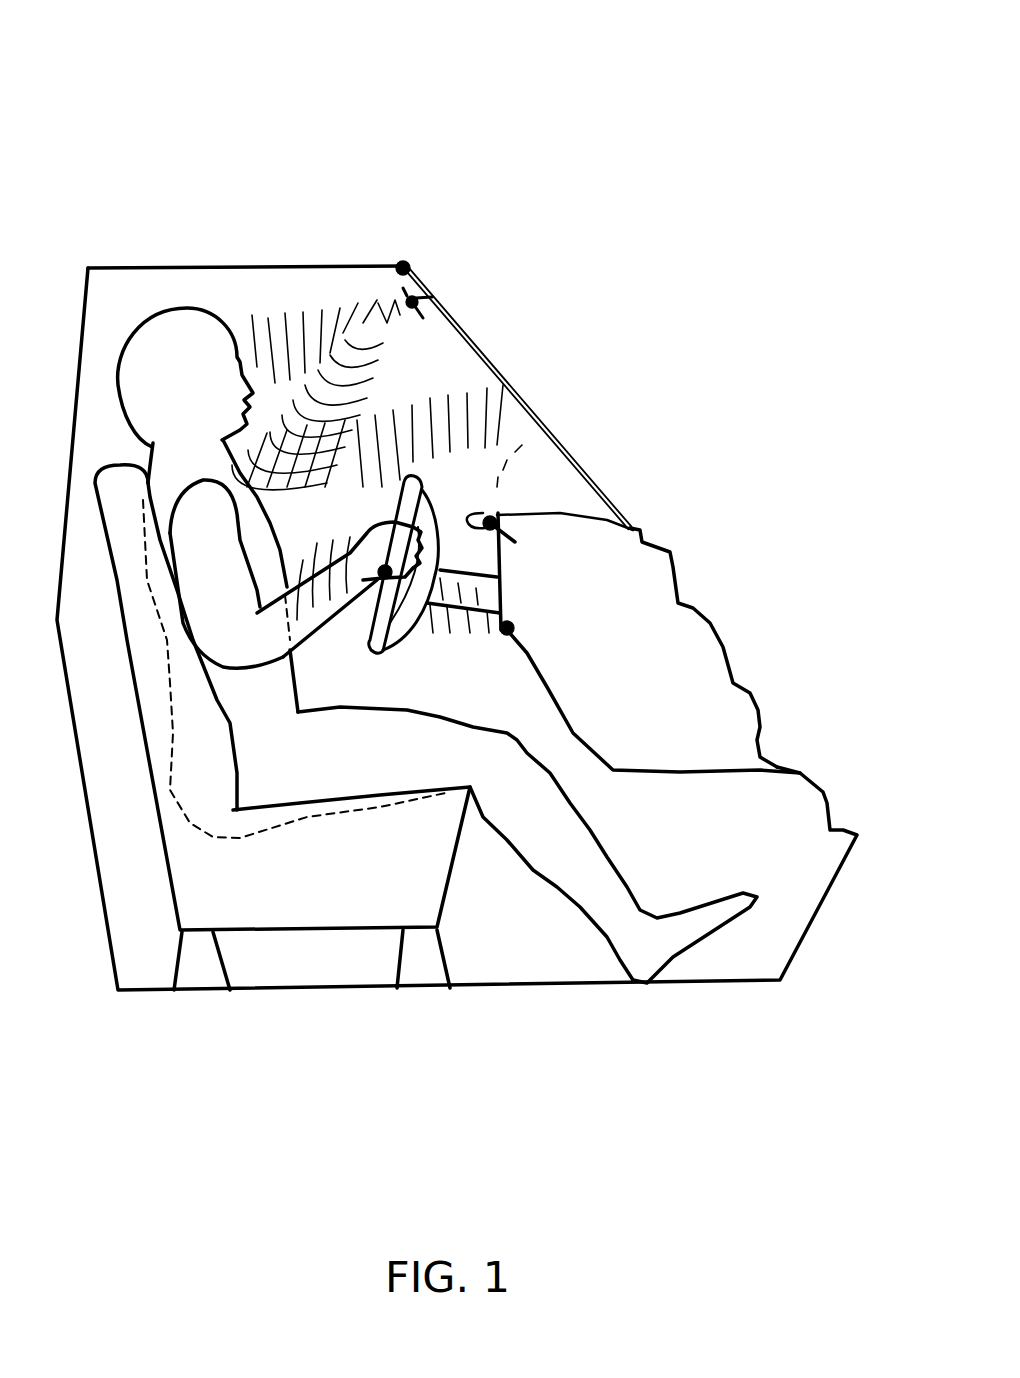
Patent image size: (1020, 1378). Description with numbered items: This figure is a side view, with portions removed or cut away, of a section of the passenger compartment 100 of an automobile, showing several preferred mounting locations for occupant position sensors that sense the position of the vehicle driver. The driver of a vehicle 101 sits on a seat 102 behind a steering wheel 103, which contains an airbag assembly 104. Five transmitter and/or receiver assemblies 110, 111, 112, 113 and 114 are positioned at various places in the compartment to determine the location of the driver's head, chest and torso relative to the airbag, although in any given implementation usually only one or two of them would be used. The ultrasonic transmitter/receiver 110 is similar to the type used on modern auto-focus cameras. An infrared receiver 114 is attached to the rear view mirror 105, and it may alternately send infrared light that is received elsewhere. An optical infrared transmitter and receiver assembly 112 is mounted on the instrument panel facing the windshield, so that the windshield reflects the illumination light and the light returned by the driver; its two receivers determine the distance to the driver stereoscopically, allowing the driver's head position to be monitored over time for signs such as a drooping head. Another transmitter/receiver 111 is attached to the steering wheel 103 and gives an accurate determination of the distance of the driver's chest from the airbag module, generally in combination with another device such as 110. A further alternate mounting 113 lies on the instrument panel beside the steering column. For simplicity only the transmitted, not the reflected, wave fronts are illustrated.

The passenger compartment section 100 is at (267, 265).
The driver of a vehicle 101 is at (363, 747).
The seat 102 is at (318, 960).
The steering wheel 103 is at (422, 484).
The airbag assembly 104 is at (398, 620).
The rear view mirror 105 is at (437, 297).
The ultrasonic transmitter/receiver 110 is at (403, 261).
The transmitter/receiver 111 is at (427, 570).
The optical infrared transmitter and receiver assembly 112 is at (495, 518).
The transmitter/receiver 113 is at (513, 630).
The infrared receiver 114 is at (433, 293).